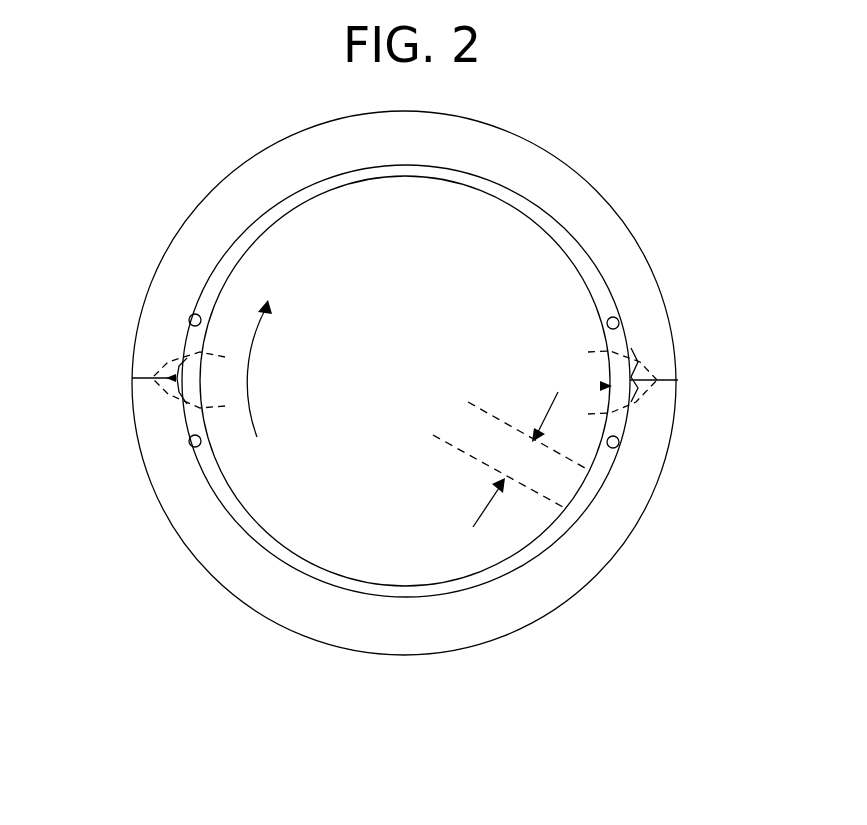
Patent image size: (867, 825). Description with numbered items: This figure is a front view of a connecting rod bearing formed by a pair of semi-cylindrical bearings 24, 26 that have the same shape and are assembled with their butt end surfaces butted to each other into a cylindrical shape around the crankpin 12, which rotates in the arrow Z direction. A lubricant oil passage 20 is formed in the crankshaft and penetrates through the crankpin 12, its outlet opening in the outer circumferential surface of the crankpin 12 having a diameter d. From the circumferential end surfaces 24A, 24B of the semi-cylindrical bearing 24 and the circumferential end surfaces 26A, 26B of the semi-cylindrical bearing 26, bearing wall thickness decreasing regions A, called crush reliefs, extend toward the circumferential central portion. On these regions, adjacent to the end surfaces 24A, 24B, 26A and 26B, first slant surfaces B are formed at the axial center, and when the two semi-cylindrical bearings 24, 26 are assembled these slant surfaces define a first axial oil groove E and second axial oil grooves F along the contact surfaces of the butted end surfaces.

The crankpin 12 is at (425, 294).
The lubricant oil passage 20 is at (453, 447).
The semi-cylindrical bearing 24 is at (585, 187).
The circumferential end surface 24A is at (133, 397).
The circumferential end surface 24B is at (677, 397).
The semi-cylindrical bearing 26 is at (247, 594).
The circumferential end surface 26A is at (133, 363).
The circumferential end surface 26B is at (677, 363).